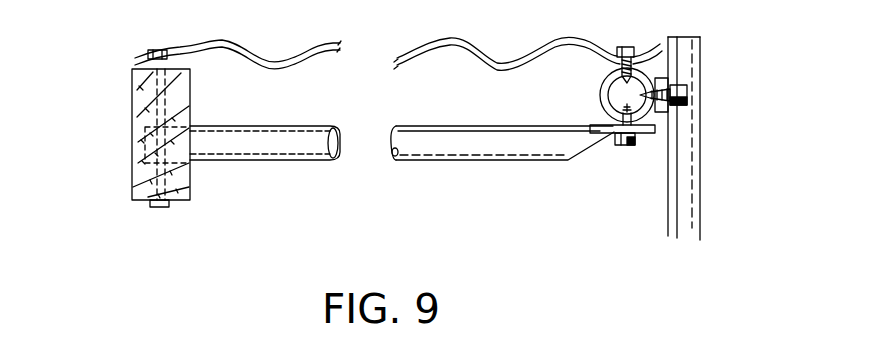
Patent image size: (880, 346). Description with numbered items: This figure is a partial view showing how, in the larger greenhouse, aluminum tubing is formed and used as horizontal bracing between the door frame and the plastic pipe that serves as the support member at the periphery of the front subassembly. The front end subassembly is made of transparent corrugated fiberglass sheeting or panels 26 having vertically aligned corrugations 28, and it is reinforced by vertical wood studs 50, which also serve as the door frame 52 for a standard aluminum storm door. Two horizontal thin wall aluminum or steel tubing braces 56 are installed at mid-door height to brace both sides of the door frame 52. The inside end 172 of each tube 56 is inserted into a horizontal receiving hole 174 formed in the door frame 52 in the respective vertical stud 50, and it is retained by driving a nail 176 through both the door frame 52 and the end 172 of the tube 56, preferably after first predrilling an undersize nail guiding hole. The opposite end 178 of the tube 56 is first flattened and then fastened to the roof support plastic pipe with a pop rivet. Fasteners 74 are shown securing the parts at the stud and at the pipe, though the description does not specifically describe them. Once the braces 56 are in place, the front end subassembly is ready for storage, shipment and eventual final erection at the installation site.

The corrugated fiberglass sheeting or panels 26 is at (213, 41).
The corrugations 28 is at (503, 56).
The vertical wood studs 50 is at (132, 140).
The door frame 52 is at (132, 193).
The horizontal braces 56 is at (432, 163).
The bolt / fastener 74 is at (157, 50).
The end of the tube 172 is at (610, 140).
The horizontal receiving holes 174 is at (190, 126).
The nail 176 is at (157, 207).
The opposite end of the tube 178 is at (191, 163).